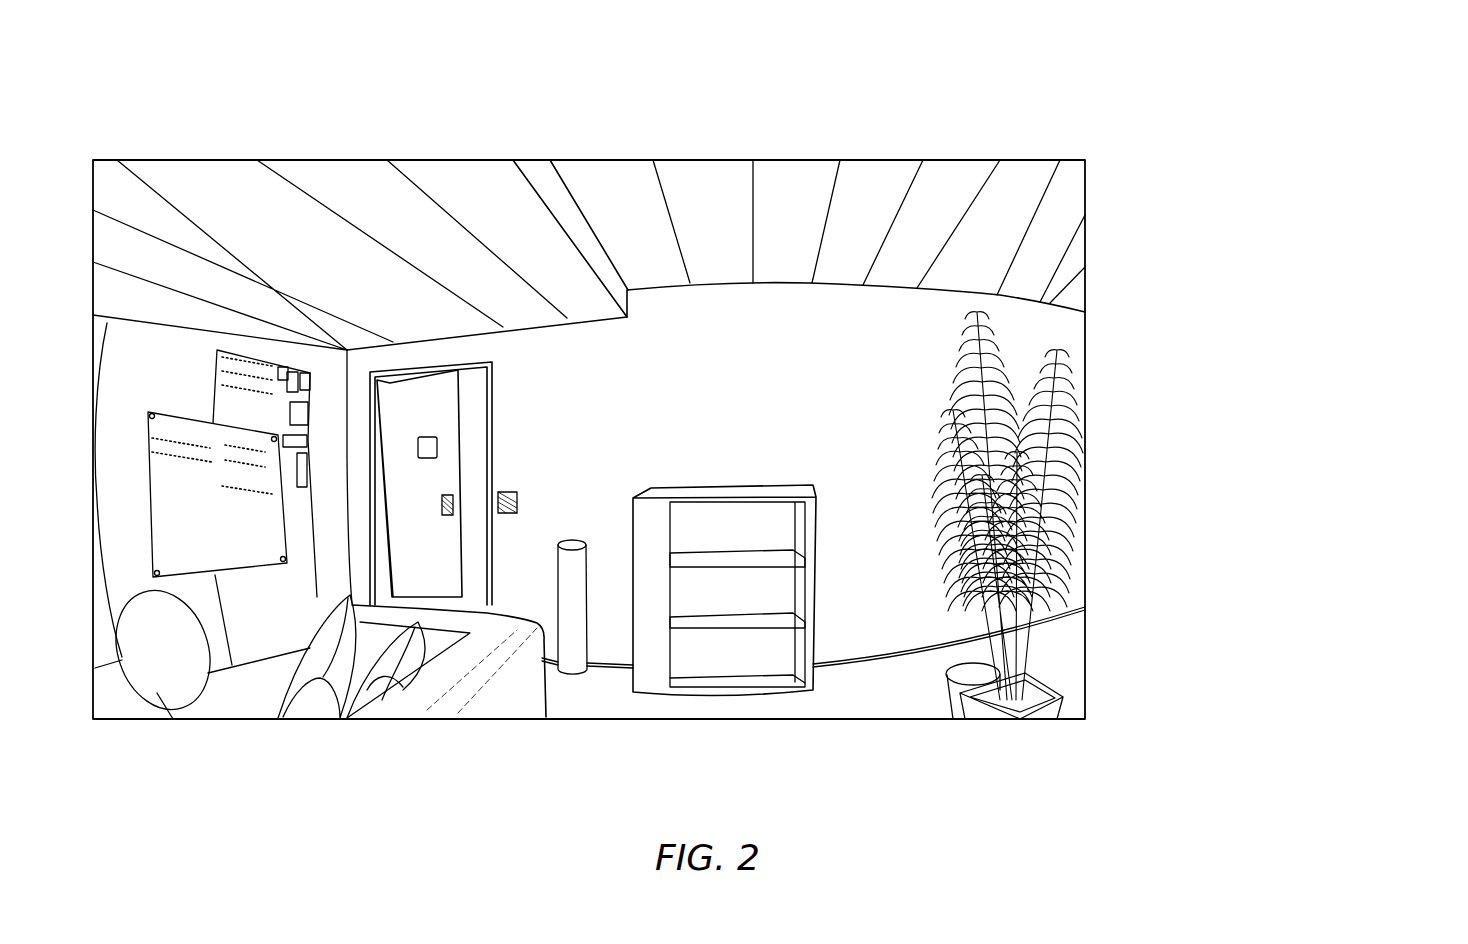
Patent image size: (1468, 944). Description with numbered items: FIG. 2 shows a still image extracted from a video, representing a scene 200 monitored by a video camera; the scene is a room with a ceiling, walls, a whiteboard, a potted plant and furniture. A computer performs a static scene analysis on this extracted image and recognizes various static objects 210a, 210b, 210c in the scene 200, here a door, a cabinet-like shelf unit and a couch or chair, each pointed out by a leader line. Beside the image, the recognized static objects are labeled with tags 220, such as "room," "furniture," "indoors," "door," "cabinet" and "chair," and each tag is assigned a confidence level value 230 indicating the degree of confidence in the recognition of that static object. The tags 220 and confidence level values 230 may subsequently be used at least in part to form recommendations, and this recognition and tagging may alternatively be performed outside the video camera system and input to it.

The scene 200 is at (290, 102).
The static object 210a is at (445, 365).
The static object 210b is at (713, 488).
The static object 210c is at (428, 687).
The tags 220 is at (1177, 210).
The confidence level values 230 is at (1307, 548).